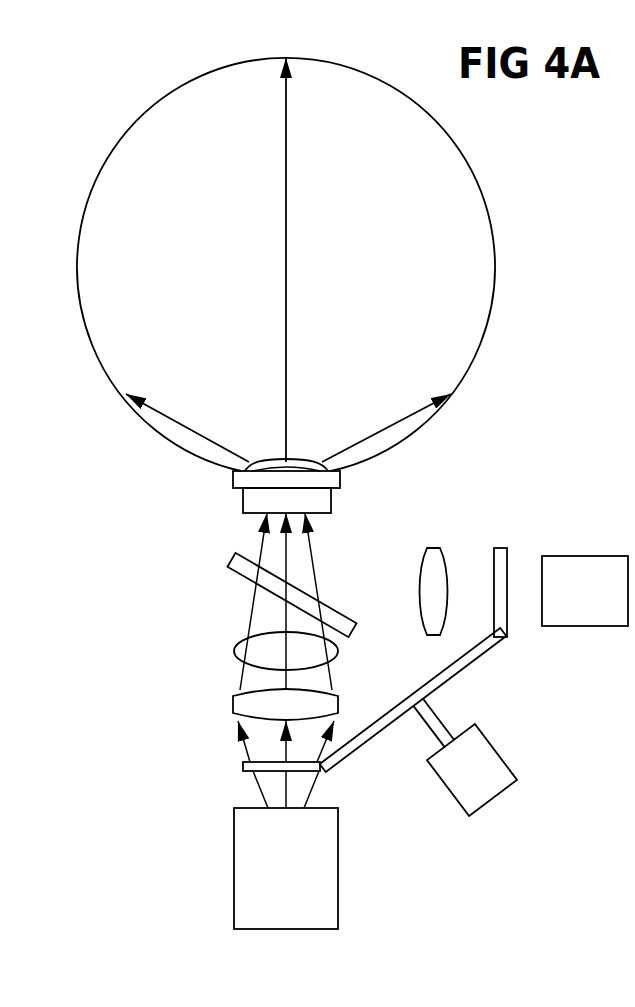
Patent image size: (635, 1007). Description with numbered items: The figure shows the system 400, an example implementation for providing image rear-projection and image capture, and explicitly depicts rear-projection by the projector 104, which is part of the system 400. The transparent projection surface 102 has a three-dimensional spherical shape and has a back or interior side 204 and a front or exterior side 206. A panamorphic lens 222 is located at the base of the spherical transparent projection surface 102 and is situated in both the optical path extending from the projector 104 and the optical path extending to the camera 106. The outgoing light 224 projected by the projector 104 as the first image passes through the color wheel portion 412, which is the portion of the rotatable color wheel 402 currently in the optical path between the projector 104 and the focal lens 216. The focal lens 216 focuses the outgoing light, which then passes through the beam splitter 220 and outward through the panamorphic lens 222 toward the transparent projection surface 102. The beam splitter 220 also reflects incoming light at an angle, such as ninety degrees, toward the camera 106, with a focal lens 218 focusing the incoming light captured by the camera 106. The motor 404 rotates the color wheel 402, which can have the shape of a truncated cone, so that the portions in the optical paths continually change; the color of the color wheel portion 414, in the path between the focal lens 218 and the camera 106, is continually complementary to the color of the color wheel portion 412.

The transparent projection surface 102 is at (84, 338).
The projector 104 is at (234, 853).
The camera 106 is at (562, 626).
The back or interior side 204 is at (128, 147).
The front or exterior side 206 is at (122, 142).
The focal lens 216 is at (233, 702).
The focal lens 218 is at (433, 548).
The beam splitter 220 is at (235, 556).
The panamorphic lens 222 is at (243, 498).
The outgoing light 224 is at (236, 651).
The system 400 is at (430, 843).
The color wheel 402 is at (368, 740).
The motor 404 is at (490, 743).
The color wheel portion 412 is at (244, 765).
The color wheel portion 414 is at (504, 547).